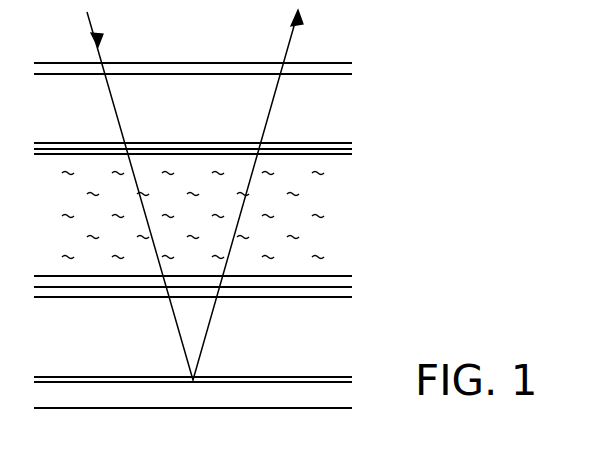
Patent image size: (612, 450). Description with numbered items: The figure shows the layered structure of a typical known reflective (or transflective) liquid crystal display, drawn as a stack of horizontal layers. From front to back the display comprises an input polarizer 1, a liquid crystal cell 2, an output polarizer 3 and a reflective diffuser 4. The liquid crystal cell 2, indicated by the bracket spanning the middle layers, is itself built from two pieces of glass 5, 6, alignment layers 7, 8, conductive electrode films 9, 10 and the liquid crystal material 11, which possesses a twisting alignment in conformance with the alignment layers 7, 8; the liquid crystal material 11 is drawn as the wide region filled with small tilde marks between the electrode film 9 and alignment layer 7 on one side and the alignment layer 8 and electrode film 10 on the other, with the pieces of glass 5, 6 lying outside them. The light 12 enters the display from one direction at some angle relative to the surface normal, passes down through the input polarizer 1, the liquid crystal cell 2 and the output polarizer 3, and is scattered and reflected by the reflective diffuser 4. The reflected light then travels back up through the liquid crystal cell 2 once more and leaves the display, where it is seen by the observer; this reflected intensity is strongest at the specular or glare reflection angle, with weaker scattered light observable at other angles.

The input polarizer 1 is at (352, 69).
The liquid crystal cell 2 is at (412, 89).
The output polarizer 3 is at (352, 379).
The reflective diffuser 4 is at (350, 397).
The piece of glass 5 is at (350, 100).
The piece of glass 6 is at (350, 331).
The alignment layer 7 is at (352, 151).
The alignment layer 8 is at (352, 278).
The conductive electrode film 9 is at (352, 147).
The conductive electrode film 10 is at (352, 290).
The liquid crystal material 11 is at (350, 215).
The light 12 is at (93, 22).